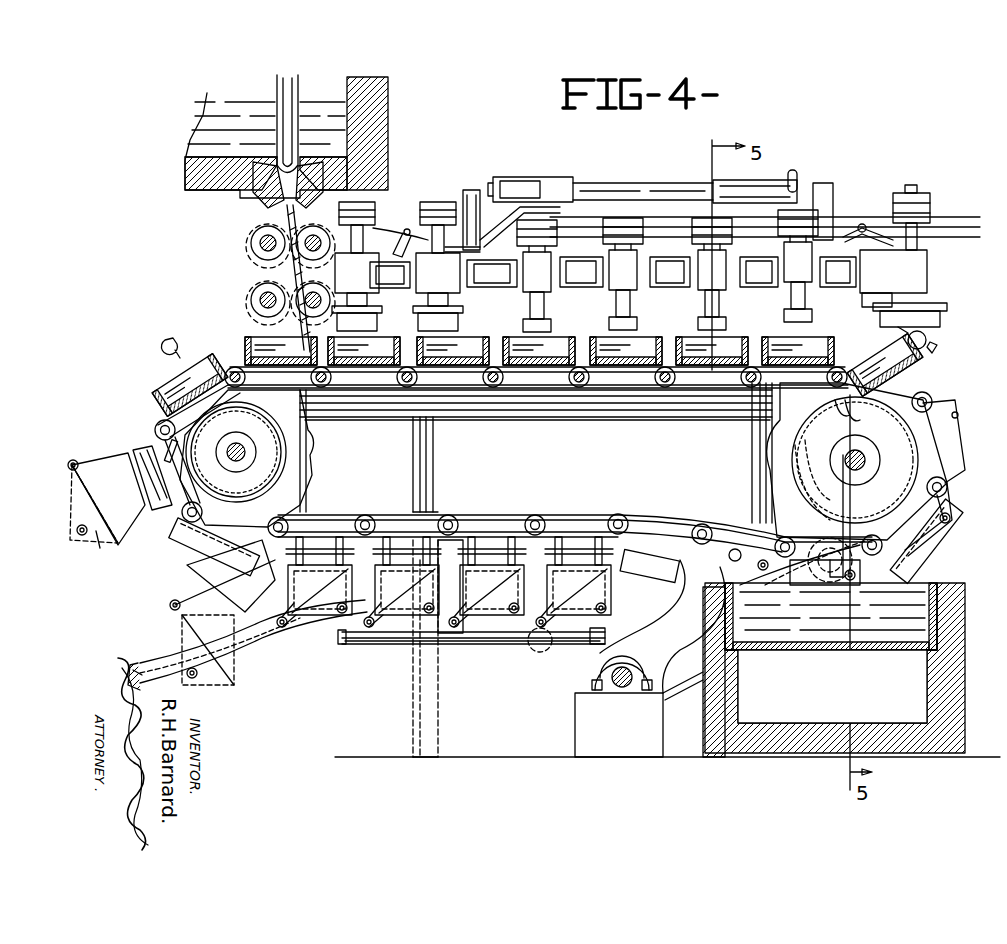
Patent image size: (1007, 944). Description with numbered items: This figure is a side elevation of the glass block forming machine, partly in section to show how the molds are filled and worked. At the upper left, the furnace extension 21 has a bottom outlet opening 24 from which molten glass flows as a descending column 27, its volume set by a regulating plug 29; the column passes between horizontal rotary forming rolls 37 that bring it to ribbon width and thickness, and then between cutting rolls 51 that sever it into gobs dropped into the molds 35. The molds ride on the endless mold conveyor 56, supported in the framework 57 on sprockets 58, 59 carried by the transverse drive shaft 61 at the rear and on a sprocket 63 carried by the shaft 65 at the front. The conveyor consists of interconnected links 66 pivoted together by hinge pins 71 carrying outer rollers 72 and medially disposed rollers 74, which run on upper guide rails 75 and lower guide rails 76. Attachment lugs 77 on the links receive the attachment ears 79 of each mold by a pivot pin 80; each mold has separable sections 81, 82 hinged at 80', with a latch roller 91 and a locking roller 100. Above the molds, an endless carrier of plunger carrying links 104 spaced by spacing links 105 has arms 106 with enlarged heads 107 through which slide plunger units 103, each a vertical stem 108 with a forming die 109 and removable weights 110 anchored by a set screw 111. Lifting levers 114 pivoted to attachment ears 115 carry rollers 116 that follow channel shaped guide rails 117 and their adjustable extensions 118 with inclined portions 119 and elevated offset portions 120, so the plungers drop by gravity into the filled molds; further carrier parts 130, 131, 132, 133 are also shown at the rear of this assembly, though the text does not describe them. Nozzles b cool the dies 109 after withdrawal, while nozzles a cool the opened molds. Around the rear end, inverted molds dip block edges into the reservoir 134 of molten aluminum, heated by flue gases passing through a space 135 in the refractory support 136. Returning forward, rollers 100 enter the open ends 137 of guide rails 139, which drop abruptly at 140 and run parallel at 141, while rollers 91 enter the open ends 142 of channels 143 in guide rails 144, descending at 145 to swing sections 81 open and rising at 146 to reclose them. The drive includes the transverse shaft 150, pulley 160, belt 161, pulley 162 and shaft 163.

The extension 21 is at (385, 110).
The bottom outlet opening 24 is at (262, 213).
The descending column or stream 27 is at (280, 225).
The regulating plug 29 is at (288, 92).
The rotary forming rolls 37 is at (322, 232).
The cutting rolls 51 is at (322, 292).
The nozzles a is at (159, 341).
The nozzles b is at (938, 346).
The mold 35 is at (645, 560).
The endless mold conveyor 56 is at (955, 507).
The framework 57 is at (752, 442).
The sprocket 58 is at (790, 488).
The sprocket 59 is at (792, 462).
The transverse drive shaft 61 is at (864, 468).
The sprocket 63 is at (300, 470).
The shaft 65 is at (238, 462).
The links 66 is at (575, 518).
The hinge pin 71 is at (370, 520).
The outer roller 72 is at (932, 400).
The medially disposed roller 74 is at (823, 400).
The upper guide rails 75 is at (590, 418).
The lower guide rails 76 is at (610, 512).
The attachment lugs 77 is at (245, 570).
The attachment ears 79 is at (148, 515).
The pivot pin 80 is at (141, 494).
The hinge 80' is at (329, 522).
The mold section 81 is at (176, 640).
The mold section 82 is at (238, 592).
The roller 91 is at (200, 678).
The roller 100 is at (535, 648).
The plunger unit 103 is at (920, 235).
The plunger carrying link 104 is at (928, 283).
The spacing link 105 is at (855, 290).
The plunger carrying arm 106 is at (905, 245).
The enlarged head 107 is at (928, 262).
The vertical stem 108 is at (648, 298).
The forming die 109 is at (622, 400).
The removable weights 110 is at (932, 200).
The set screw 111 is at (930, 212).
The lifting lever 114 is at (388, 222).
The attachment ears 115 is at (393, 246).
The roller 116 is at (398, 234).
The channel shaped guide rail 117 is at (578, 226).
The adjustable extension 118 is at (470, 190).
The upwardly inclined portion 119 is at (480, 247).
The elevated offset portion 120 is at (516, 185).
The press column 130 is at (736, 214).
The stem 131 is at (752, 240).
The pipe 132 is at (838, 192).
The rail 133 is at (790, 168).
The reservoir 134 is at (915, 580).
The space 135 is at (798, 698).
The refractory support 136 is at (905, 760).
The open ends 137 is at (695, 606).
The guide rails 139 is at (485, 645).
The abruptly downward portion 140 is at (665, 590).
The parallel portion 141 is at (392, 648).
The open ends 142 is at (395, 585).
The groove or channel 143 is at (285, 645).
The guide rails 144 is at (255, 660).
The downward portion 145 is at (250, 640).
The inclined portion 146 is at (148, 650).
The transverse shaft 150 is at (620, 687).
The pulley 160 is at (652, 672).
The belt 161 is at (668, 695).
The pulley 162 is at (900, 575).
The shaft 163 is at (830, 530).